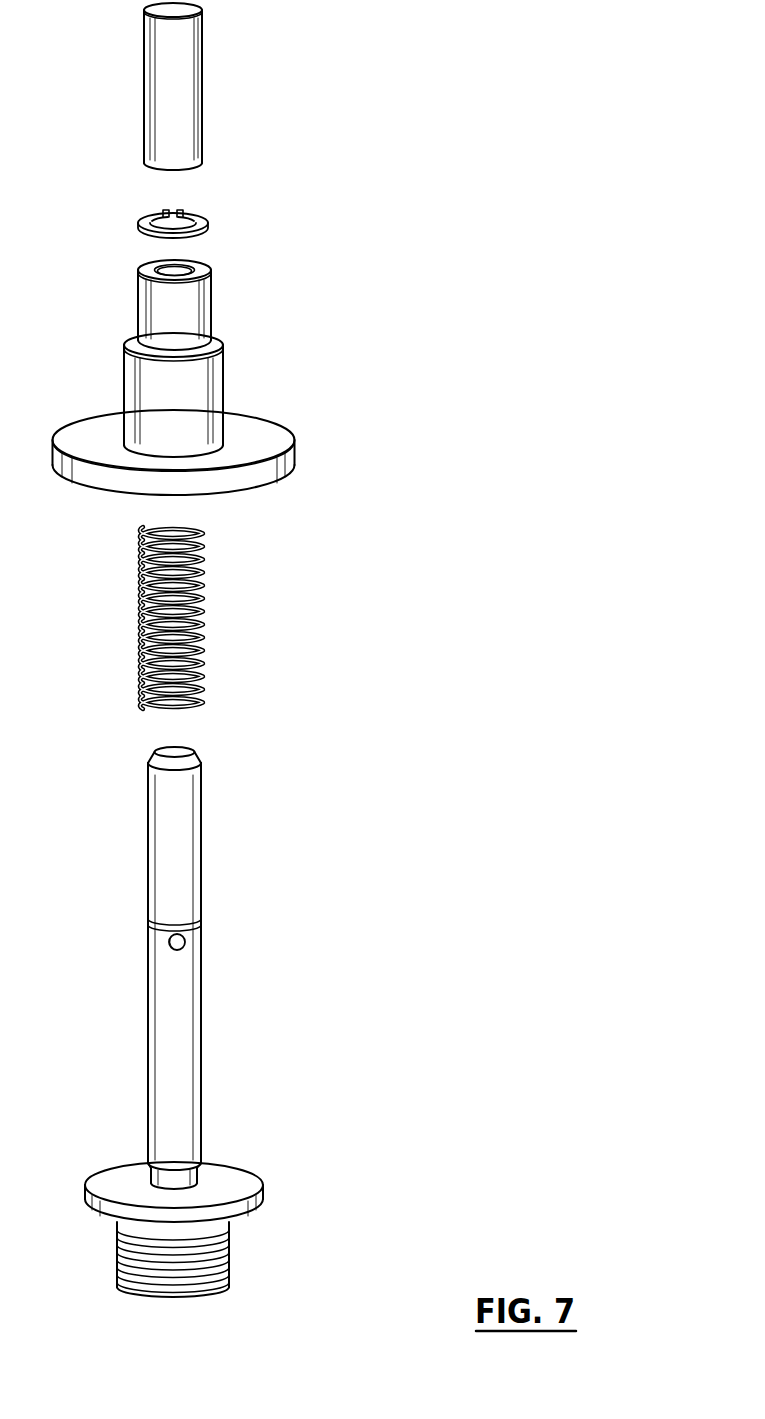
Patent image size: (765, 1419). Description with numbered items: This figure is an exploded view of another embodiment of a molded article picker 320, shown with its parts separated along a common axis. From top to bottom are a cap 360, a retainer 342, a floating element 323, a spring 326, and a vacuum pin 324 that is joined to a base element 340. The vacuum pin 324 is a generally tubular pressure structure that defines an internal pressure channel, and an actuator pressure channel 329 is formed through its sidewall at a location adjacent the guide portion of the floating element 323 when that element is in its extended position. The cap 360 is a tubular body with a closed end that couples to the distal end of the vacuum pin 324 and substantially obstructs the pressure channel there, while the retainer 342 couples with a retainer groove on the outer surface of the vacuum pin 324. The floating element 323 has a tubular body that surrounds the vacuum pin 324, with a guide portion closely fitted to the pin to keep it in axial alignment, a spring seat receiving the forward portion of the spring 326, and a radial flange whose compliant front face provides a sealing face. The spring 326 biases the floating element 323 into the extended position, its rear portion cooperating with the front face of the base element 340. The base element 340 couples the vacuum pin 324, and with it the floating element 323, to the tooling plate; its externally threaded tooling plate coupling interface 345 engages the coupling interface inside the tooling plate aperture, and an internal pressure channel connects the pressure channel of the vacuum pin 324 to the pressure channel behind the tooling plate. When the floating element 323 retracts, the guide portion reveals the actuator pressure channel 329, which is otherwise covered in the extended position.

The molded article picker 320 is at (500, 283).
The cap 360 is at (201, 76).
The retainer 342 is at (208, 222).
The floating element 323 is at (283, 478).
The spring 326 is at (200, 645).
The vacuum pin 324 is at (199, 1003).
The actuator pressure channel 329 is at (186, 941).
The base element 340 is at (263, 1205).
The tooling plate coupling interface 345 is at (216, 1272).